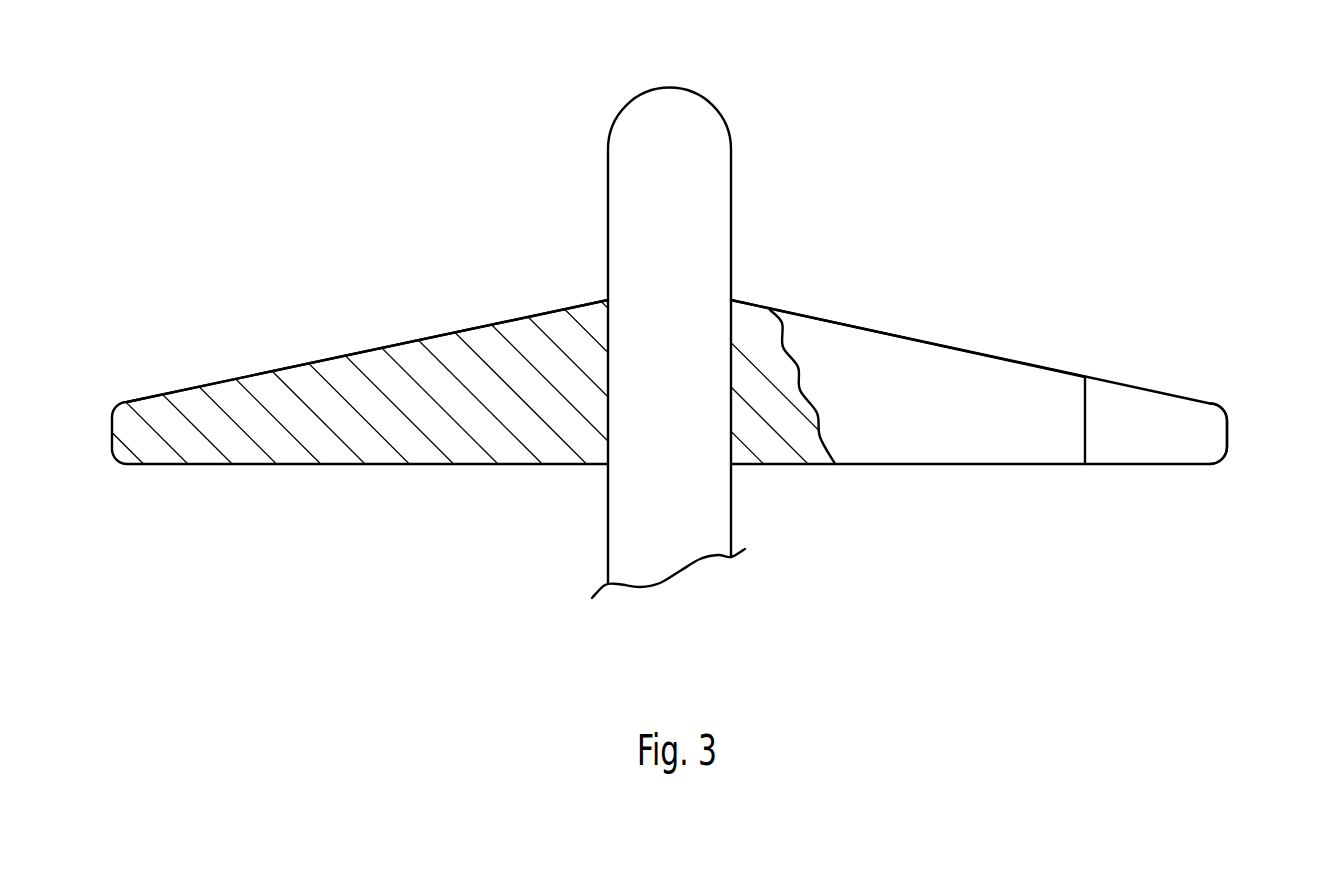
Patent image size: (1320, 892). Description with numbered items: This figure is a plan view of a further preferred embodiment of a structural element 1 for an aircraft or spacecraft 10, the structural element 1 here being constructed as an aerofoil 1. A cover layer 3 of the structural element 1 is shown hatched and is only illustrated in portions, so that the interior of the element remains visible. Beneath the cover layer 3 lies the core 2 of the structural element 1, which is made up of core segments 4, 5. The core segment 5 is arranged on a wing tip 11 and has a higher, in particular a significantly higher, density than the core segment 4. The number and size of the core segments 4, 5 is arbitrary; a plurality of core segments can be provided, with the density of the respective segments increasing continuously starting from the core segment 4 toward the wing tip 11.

The aircraft or spacecraft 10 is at (294, 162).
The structural element 1 is at (255, 326).
The core 2 is at (983, 465).
The cover layer 3 is at (446, 346).
The core segment 4 is at (926, 354).
The core segment 5 is at (1135, 405).
The wing tip 11 is at (1228, 433).